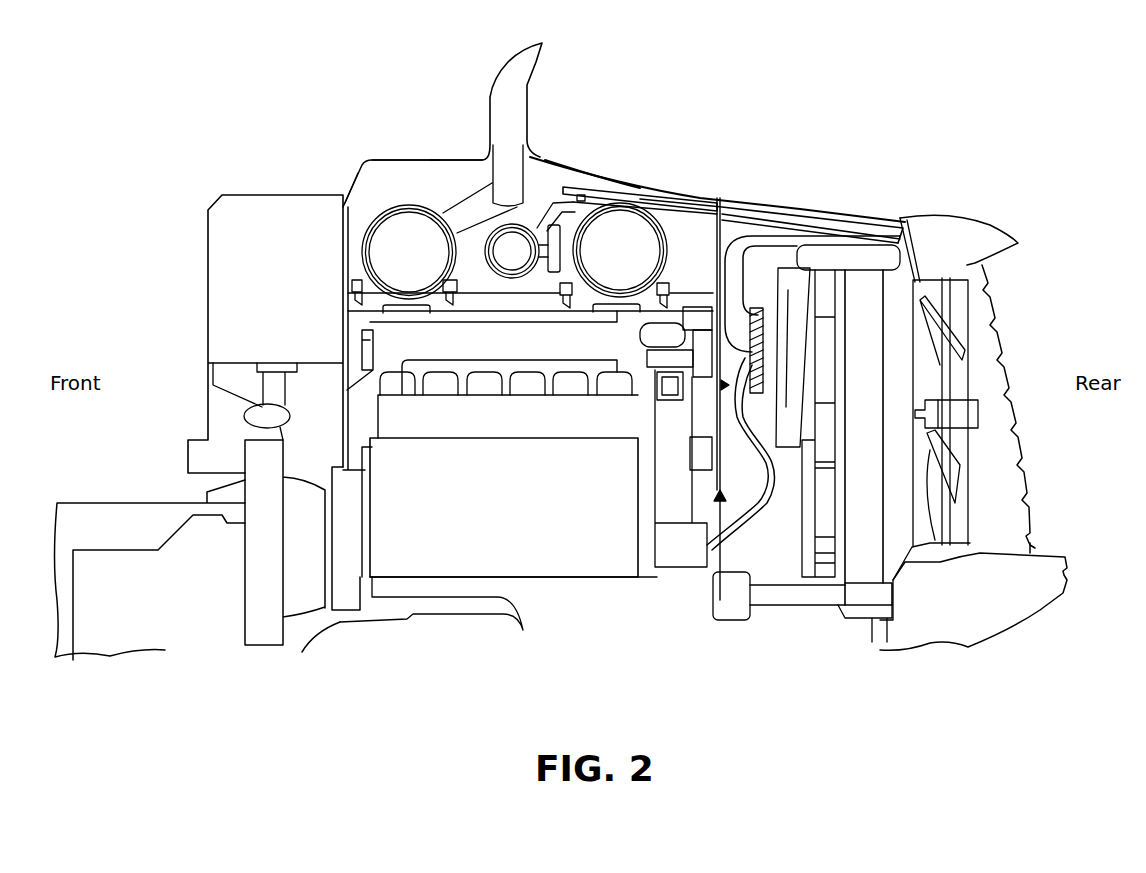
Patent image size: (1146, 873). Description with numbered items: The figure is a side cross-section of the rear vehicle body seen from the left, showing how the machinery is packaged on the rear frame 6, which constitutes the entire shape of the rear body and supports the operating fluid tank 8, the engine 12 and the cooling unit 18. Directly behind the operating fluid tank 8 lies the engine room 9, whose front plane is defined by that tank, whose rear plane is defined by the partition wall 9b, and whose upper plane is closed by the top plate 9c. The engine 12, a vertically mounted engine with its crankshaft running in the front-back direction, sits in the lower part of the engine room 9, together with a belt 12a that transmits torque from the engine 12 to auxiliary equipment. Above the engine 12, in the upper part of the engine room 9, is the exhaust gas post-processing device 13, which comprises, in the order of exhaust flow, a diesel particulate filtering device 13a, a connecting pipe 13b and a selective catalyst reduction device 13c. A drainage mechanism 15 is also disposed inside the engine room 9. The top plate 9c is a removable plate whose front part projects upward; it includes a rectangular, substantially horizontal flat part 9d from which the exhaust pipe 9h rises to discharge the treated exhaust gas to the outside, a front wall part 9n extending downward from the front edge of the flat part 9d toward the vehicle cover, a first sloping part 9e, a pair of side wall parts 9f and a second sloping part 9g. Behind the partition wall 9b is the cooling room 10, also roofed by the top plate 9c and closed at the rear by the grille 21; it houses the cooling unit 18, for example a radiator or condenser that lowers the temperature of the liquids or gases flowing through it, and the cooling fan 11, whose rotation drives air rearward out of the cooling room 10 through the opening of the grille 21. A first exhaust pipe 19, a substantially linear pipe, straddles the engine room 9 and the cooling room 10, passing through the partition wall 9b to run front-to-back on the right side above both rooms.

The rear frame 6 is at (322, 627).
The operating fluid tank 8 is at (258, 193).
The engine room 9 is at (553, 193).
The partition wall 9b is at (741, 215).
The top plate 9c is at (441, 158).
The flat part 9d is at (462, 152).
The first sloping part 9e is at (602, 176).
The side wall parts 9f is at (415, 177).
The second sloping part 9g is at (774, 203).
The exhaust pipe 9h is at (515, 46).
The front wall part 9n is at (352, 180).
The cooling room 10 is at (782, 565).
The cooling fan 11 is at (960, 336).
The engine 12 is at (433, 553).
The belt 12a is at (680, 525).
The exhaust gas post-processing device 13 is at (398, 207).
The diesel particulate filtering device 13a is at (685, 254).
The connecting pipe 13b is at (492, 252).
The selective catalyst reduction device 13c is at (360, 258).
The drainage mechanism 15 is at (648, 188).
The cooling unit 18 is at (861, 595).
The first exhaust pipe 19 is at (851, 226).
The grille 21 is at (1037, 360).